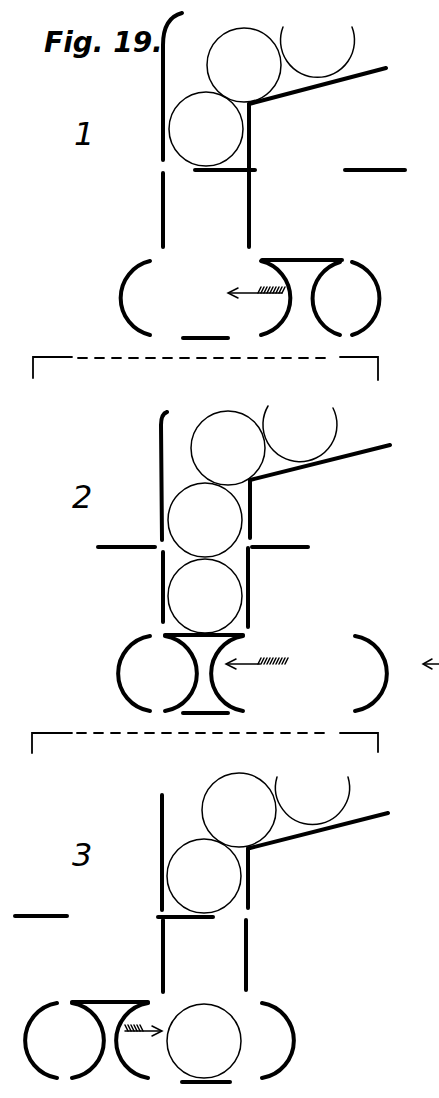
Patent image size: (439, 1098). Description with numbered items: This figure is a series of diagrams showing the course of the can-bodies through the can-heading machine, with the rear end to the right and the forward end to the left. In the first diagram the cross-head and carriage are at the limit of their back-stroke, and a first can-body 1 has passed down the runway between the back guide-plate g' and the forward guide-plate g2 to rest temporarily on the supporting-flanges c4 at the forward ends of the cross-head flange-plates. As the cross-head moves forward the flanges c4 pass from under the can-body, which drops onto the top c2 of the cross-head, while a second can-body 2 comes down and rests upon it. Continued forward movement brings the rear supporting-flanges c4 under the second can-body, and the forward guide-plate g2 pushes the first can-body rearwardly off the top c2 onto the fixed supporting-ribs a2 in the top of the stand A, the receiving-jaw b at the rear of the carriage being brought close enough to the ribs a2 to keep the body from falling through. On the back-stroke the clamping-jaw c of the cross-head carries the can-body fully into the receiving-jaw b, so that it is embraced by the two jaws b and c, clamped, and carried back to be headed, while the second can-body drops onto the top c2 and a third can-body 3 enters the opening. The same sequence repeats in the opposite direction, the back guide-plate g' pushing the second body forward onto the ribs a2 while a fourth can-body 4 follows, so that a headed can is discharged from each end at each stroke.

The first can-body 1 is at (205, 585).
The second can-body 2 is at (224, 470).
The third can-body 3 is at (273, 437).
The fourth can-body 4 is at (306, 615).
The receiving-jaw b is at (125, 295).
The clamping-jaw c is at (284, 314).
The top of the cross-head c2 is at (292, 259).
The supporting-flanges c4 is at (255, 168).
The back guide-plate g' is at (263, 547).
The forward guide-plate g2 is at (160, 213).
The supporting-ribs a2 is at (206, 337).
The stand A is at (58, 363).